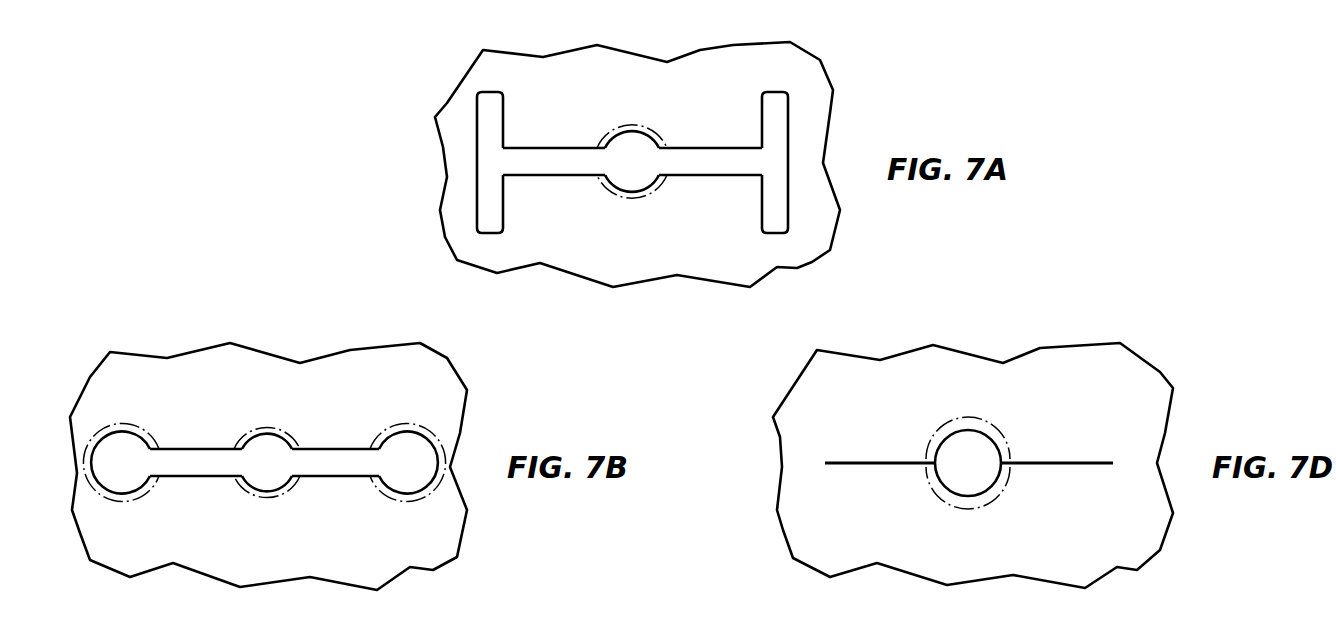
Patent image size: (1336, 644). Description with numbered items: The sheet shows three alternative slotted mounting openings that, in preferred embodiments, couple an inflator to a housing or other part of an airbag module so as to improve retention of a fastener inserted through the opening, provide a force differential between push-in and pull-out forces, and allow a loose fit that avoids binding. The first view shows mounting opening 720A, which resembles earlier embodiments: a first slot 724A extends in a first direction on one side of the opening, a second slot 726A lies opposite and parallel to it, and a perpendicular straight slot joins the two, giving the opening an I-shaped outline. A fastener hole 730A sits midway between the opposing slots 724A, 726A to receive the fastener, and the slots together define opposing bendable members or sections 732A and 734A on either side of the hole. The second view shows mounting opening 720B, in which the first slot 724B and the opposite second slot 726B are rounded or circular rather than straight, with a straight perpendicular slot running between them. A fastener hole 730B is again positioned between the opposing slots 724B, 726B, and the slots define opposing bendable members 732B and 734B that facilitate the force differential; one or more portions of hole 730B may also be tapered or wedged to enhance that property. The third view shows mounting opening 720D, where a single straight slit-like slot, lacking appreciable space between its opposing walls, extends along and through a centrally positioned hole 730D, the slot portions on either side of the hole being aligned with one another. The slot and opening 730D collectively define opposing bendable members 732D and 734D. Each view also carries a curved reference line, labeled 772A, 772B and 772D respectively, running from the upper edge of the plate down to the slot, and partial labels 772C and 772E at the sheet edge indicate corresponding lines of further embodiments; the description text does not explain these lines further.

In FIG. 7A, the mounting opening 720A is at (688, 207).
In FIG. 7A, the fastener hole 730A is at (638, 173).
In FIG. 7A, the bendable member 732A is at (553, 177).
In FIG. 7A, the bendable member 734A is at (712, 147).
In FIG. 7A, the second slot 726A is at (478, 115).
In FIG. 7A, the first slot 724A is at (789, 110).
In FIG. 7A, the reference line 772A is at (547, 163).
In FIG. 7B, the mounting opening 720B is at (320, 503).
In FIG. 7B, the fastener hole 730B is at (270, 472).
In FIG. 7B, the bendable member 732B is at (195, 478).
In FIG. 7B, the bendable member 734B is at (333, 448).
In FIG. 7B, the second slot 726B is at (92, 463).
In FIG. 7B, the first slot 724B is at (435, 442).
In FIG. 7B, the reference line 772B is at (199, 460).
In FIG. 7B, the reference line 772C is at (81, 643).
In FIG. 7D, the mounting opening 720D is at (1017, 500).
In FIG. 7D, the hole 730D is at (967, 465).
In FIG. 7D, the bendable member 732D is at (890, 465).
In FIG. 7D, the bendable member 734D is at (1033, 461).
In FIG. 7D, the reference line 772D is at (1083, 462).
In FIG. 7D, the reference line 772E is at (1173, 643).